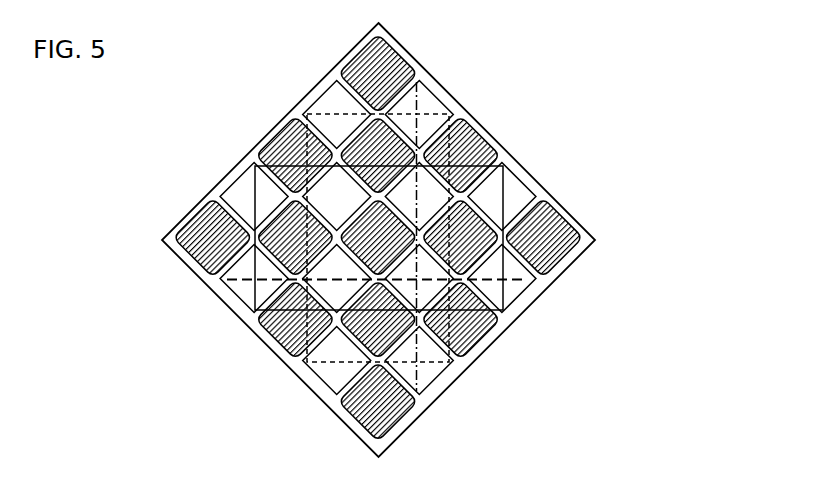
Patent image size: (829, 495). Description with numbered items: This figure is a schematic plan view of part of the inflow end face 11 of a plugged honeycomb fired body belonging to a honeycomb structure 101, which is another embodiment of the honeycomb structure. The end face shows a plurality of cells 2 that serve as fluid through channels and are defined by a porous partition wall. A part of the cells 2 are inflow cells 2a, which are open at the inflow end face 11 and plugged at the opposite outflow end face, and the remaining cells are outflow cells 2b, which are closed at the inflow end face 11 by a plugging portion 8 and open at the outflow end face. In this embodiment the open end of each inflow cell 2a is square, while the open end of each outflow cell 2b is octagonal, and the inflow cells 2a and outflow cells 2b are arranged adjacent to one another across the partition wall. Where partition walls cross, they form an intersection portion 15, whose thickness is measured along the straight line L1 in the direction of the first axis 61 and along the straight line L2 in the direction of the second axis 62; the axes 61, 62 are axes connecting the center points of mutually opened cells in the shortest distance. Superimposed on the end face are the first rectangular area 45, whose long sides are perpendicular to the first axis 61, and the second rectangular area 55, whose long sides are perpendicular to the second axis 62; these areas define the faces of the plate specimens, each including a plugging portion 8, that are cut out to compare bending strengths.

The honeycomb structure 101 is at (706, 28).
The inflow end face 11 is at (226, 176).
The plugging portion 8 is at (373, 75).
The intersection portion 15 is at (423, 155).
The cells 2 is at (413, 265).
The inflow cell 2a is at (247, 292).
The outflow cell 2b is at (547, 218).
The second rectangular area 55 is at (431, 107).
The first rectangular area 45 is at (509, 291).
The straight line L2 is at (416, 200).
The straight line L1 is at (268, 280).
The first axis 61 is at (430, 280).
The second axis 62 is at (448, 282).